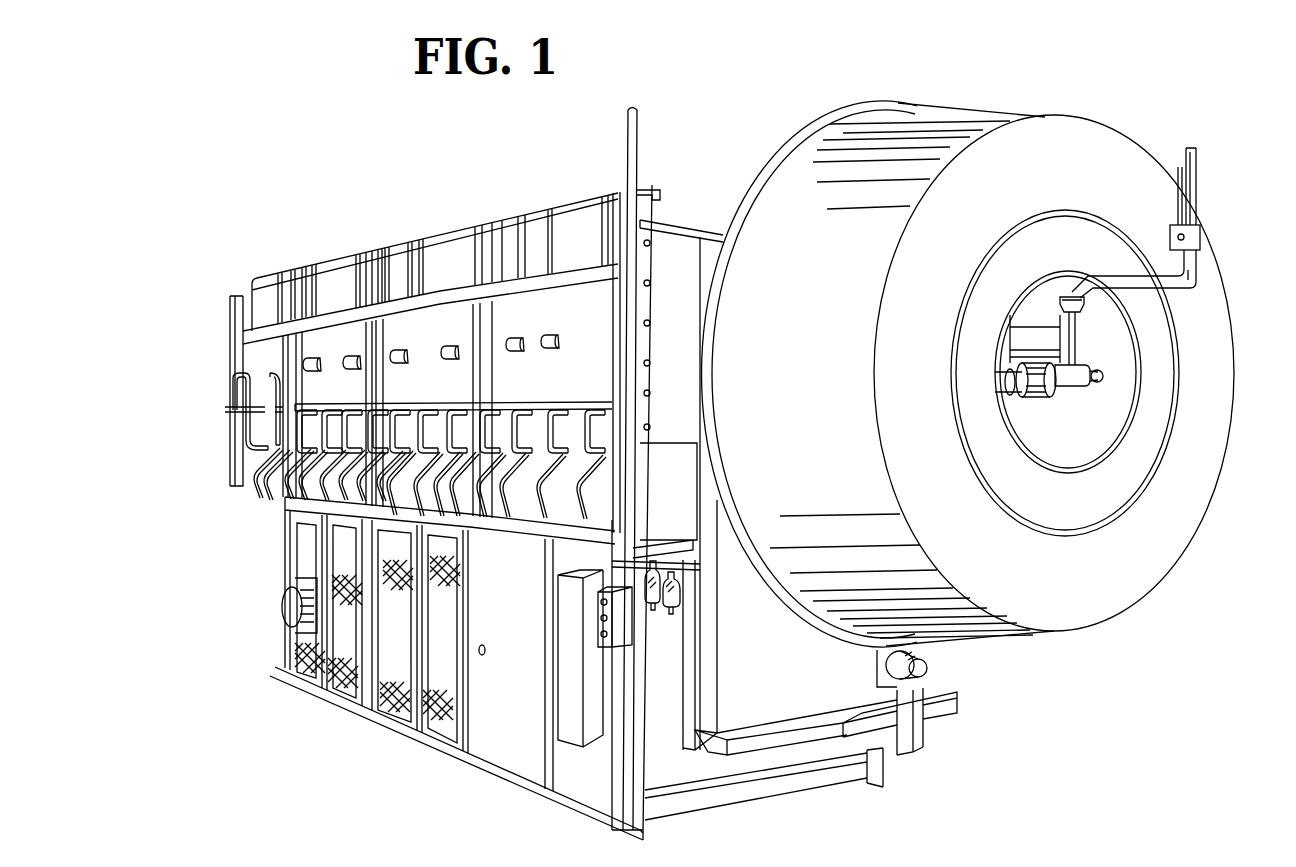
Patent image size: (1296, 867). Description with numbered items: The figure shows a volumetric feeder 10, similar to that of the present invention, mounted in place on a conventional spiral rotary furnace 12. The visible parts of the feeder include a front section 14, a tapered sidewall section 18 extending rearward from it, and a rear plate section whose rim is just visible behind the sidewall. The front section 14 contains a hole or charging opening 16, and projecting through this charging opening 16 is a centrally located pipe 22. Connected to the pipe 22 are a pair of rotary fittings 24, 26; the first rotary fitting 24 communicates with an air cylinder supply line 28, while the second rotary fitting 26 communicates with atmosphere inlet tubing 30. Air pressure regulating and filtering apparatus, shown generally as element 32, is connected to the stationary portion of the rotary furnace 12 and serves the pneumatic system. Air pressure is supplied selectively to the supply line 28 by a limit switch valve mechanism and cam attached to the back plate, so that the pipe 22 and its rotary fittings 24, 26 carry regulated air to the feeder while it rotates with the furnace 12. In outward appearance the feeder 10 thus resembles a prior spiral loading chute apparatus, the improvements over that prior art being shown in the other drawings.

The volumetric feeder 10 is at (1224, 262).
The spiral rotary furnace 12 is at (226, 318).
The front section 14 is at (928, 367).
The charging opening 16 is at (1092, 454).
The tapered sidewall section 18 is at (815, 371).
The pipe 22 is at (1028, 365).
The rotary fitting 24 is at (1004, 393).
The rotary fitting 26 is at (1082, 391).
The air cylinder supply line 28 is at (1177, 200).
The atmosphere inlet tubing 30 is at (1198, 200).
The air pressure regulating and filtering apparatus 32 is at (660, 605).